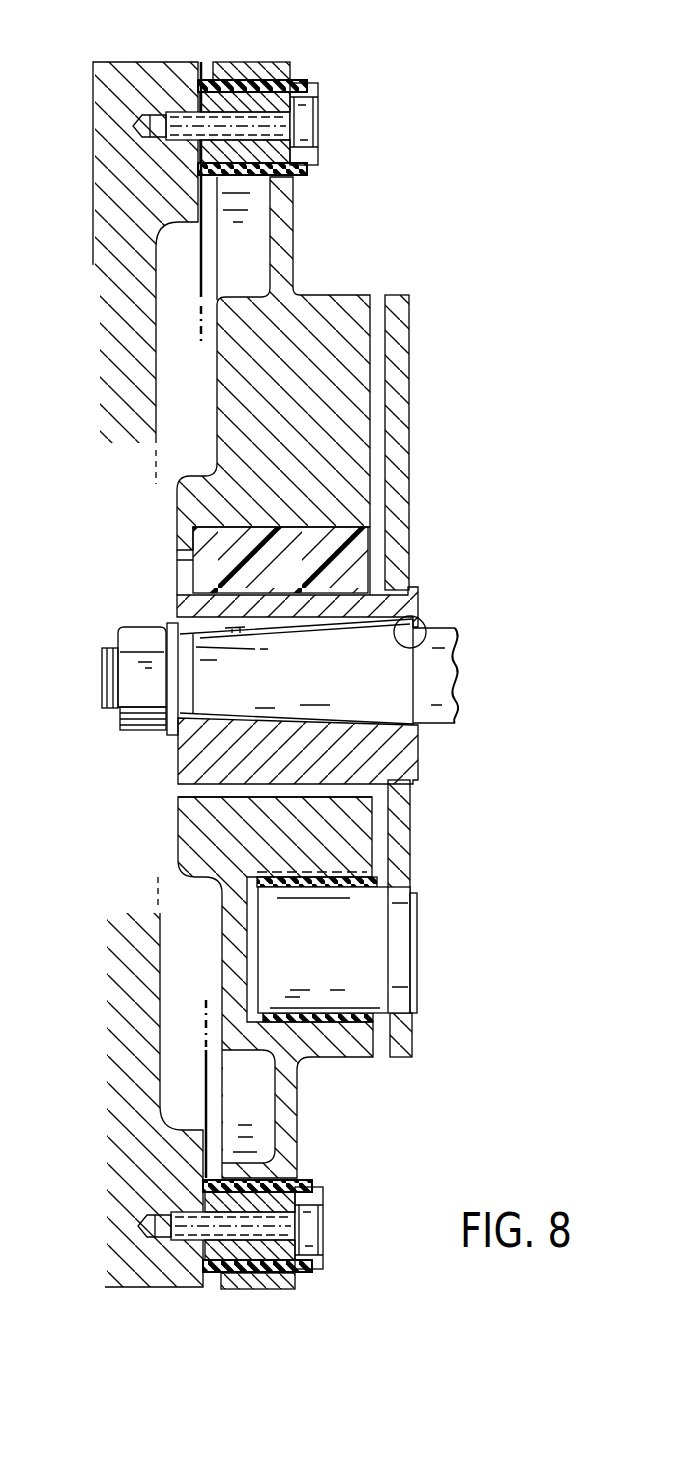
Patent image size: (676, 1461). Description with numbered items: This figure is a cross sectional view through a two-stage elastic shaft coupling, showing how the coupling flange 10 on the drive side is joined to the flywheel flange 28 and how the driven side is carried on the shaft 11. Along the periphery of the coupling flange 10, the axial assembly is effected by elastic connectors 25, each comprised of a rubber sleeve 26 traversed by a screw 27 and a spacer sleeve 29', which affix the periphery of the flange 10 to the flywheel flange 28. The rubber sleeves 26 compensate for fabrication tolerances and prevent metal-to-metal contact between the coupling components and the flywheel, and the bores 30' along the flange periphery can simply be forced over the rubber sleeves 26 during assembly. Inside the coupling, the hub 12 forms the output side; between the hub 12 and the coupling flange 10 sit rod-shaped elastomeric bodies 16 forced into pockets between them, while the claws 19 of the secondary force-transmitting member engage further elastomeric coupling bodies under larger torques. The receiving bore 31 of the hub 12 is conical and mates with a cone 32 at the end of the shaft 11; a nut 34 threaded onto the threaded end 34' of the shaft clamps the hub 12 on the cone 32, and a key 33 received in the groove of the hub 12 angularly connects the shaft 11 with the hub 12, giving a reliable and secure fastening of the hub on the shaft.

The coupling flange 10 is at (283, 243).
The shaft 11 is at (442, 657).
The hub 12 is at (188, 767).
The elastomeric bodies 16 is at (350, 553).
The claws 19 is at (345, 932).
The elastic connectors 25 is at (316, 59).
The rubber sleeve 26 is at (293, 170).
The screw 27 is at (298, 110).
The flywheel flange 28 is at (135, 1180).
The spacer sleeve 29' is at (243, 685).
The bores 30' is at (255, 636).
The receiving bore 31 is at (423, 630).
The cone 32 is at (354, 671).
The key 33 is at (227, 630).
The nut 34 is at (101, 679).
The threaded end 34' is at (71, 707).